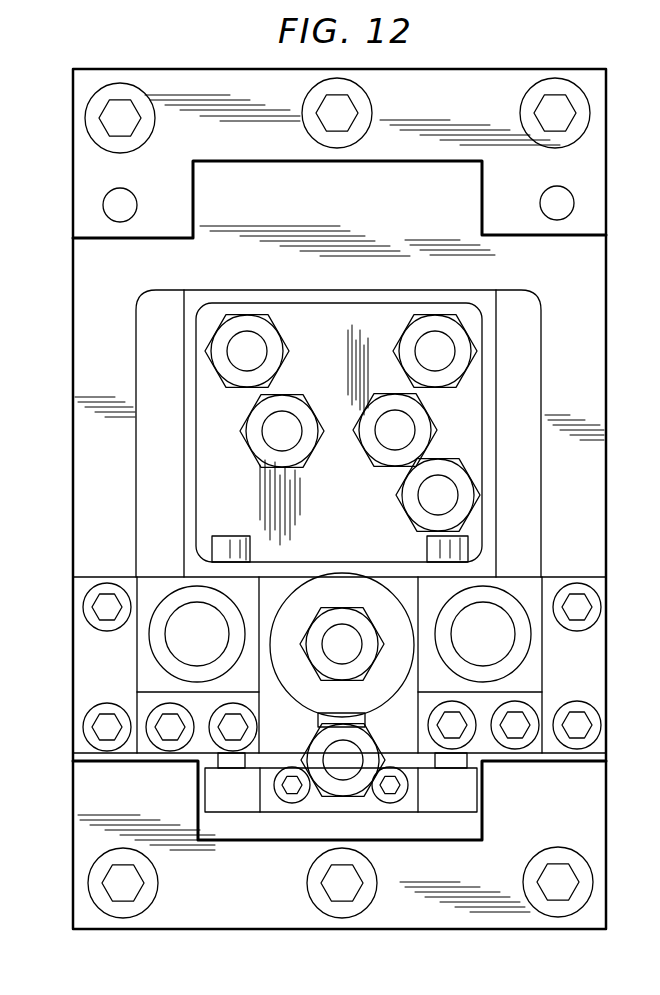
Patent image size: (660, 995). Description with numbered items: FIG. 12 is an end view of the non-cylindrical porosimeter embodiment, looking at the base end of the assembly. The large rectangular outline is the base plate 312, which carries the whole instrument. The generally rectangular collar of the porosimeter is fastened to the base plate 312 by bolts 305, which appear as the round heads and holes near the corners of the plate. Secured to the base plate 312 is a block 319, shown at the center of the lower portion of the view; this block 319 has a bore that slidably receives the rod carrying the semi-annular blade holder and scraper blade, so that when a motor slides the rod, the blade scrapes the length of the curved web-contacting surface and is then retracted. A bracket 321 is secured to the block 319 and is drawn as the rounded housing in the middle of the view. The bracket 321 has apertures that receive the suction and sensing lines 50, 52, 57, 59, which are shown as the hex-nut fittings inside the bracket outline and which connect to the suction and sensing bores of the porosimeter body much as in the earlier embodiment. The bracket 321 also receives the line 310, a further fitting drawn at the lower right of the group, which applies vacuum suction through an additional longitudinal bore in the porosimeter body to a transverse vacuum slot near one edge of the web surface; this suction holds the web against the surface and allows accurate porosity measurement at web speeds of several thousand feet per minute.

The base plate 312 is at (590, 300).
The bolts 305 is at (126, 210).
The bracket 321 is at (205, 500).
The line 57 is at (251, 340).
The line 59 is at (442, 338).
The line 50 is at (290, 442).
The line 52 is at (388, 443).
The line 310 is at (455, 489).
The block 319 is at (296, 591).